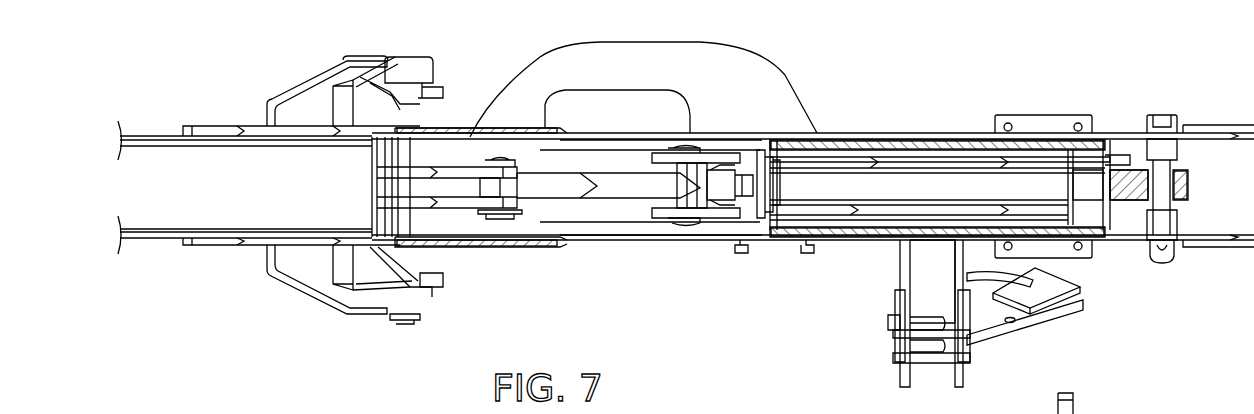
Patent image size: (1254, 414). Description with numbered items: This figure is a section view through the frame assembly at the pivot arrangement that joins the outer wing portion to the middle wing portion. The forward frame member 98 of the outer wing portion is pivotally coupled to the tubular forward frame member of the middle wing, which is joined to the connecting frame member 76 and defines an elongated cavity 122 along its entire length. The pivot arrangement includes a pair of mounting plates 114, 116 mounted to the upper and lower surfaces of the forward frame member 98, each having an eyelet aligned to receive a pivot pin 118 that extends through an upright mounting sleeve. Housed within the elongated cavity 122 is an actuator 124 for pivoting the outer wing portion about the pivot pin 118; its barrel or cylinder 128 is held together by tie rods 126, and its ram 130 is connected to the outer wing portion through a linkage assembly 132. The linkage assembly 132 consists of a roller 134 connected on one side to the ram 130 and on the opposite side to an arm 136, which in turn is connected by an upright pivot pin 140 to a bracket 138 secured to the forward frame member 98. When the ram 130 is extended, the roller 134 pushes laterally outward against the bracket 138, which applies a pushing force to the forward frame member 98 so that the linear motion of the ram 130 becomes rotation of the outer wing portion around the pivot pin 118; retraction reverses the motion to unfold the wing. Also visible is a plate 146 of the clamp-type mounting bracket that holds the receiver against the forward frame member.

The connecting frame member 76 is at (1113, 133).
The forward frame member 98 is at (180, 218).
The mounting plate 114 is at (290, 245).
The mounting plate 116 is at (305, 130).
The pivot pin 118 is at (400, 318).
The elongated cavity 122 is at (752, 163).
The actuator 124 is at (870, 157).
The tie rods 126 is at (876, 222).
The barrel or cylinder 128 is at (988, 183).
The ram 130 is at (738, 190).
The linkage assembly 132 is at (556, 205).
The roller 134 is at (668, 215).
The arm 136 is at (625, 178).
The bracket 138 is at (470, 163).
The upright pivot pin 140 is at (500, 218).
The plate 146 is at (1045, 122).